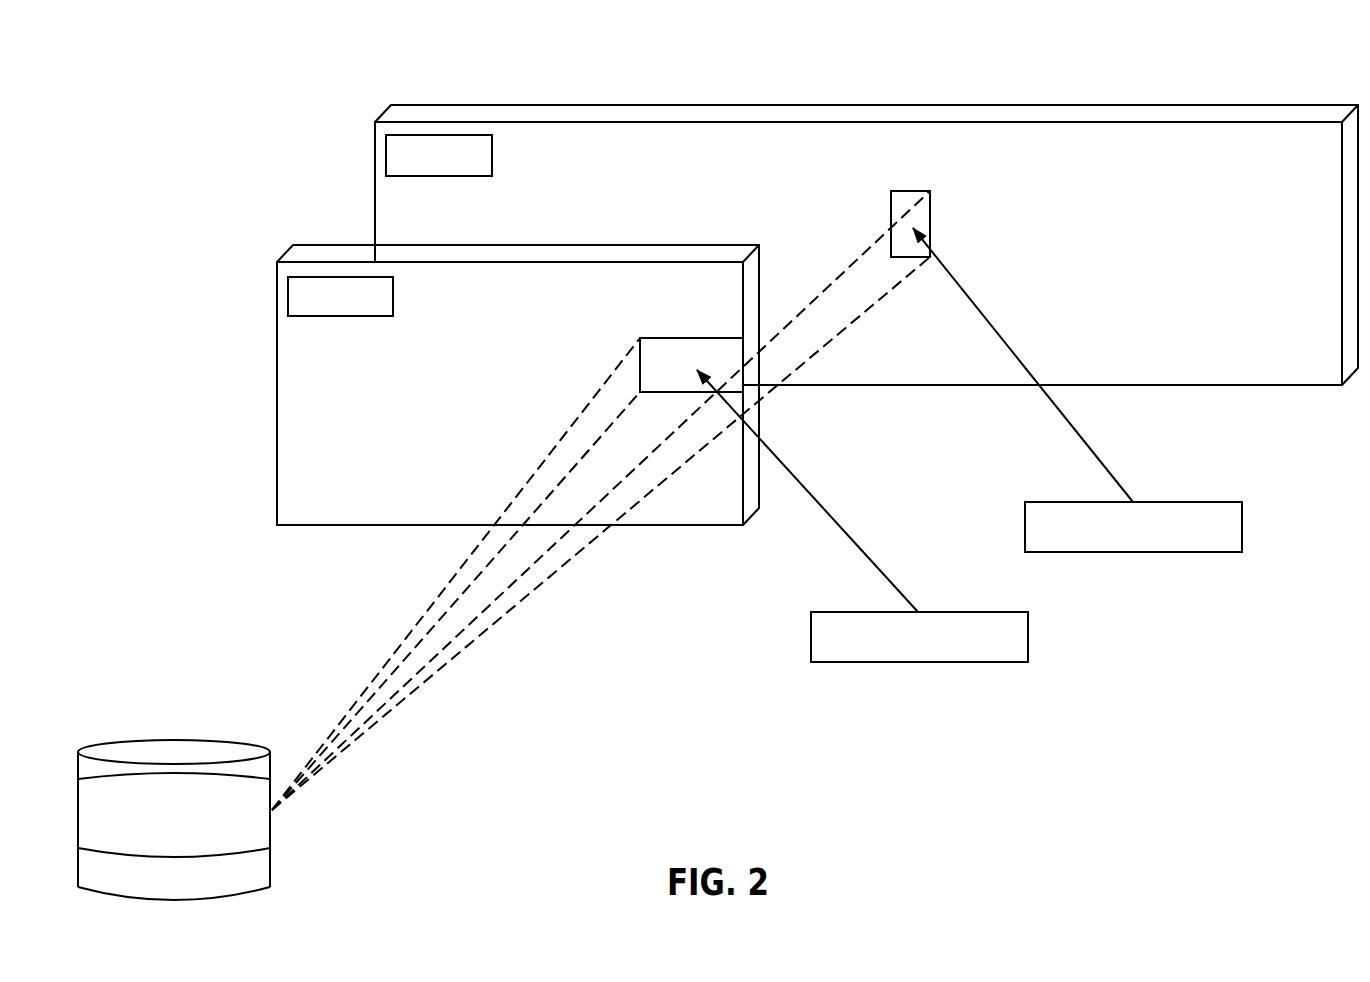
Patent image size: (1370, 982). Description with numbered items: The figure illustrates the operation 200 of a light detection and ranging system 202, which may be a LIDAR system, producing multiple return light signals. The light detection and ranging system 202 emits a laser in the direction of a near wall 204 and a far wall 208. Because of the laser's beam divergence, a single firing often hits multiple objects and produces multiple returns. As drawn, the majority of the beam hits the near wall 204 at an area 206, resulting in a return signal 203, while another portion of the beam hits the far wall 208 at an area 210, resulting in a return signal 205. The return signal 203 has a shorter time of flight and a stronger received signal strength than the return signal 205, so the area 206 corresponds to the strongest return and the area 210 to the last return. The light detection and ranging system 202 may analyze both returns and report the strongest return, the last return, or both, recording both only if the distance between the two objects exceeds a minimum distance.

The operation 200 is at (735, 46).
The light detection and ranging system 202 is at (275, 859).
The return signal 203 is at (385, 652).
The near wall 204 is at (274, 280).
The return signal 205 is at (476, 654).
The area 206 is at (1029, 636).
The far wall 208 is at (372, 140).
The area 210 is at (1243, 528).